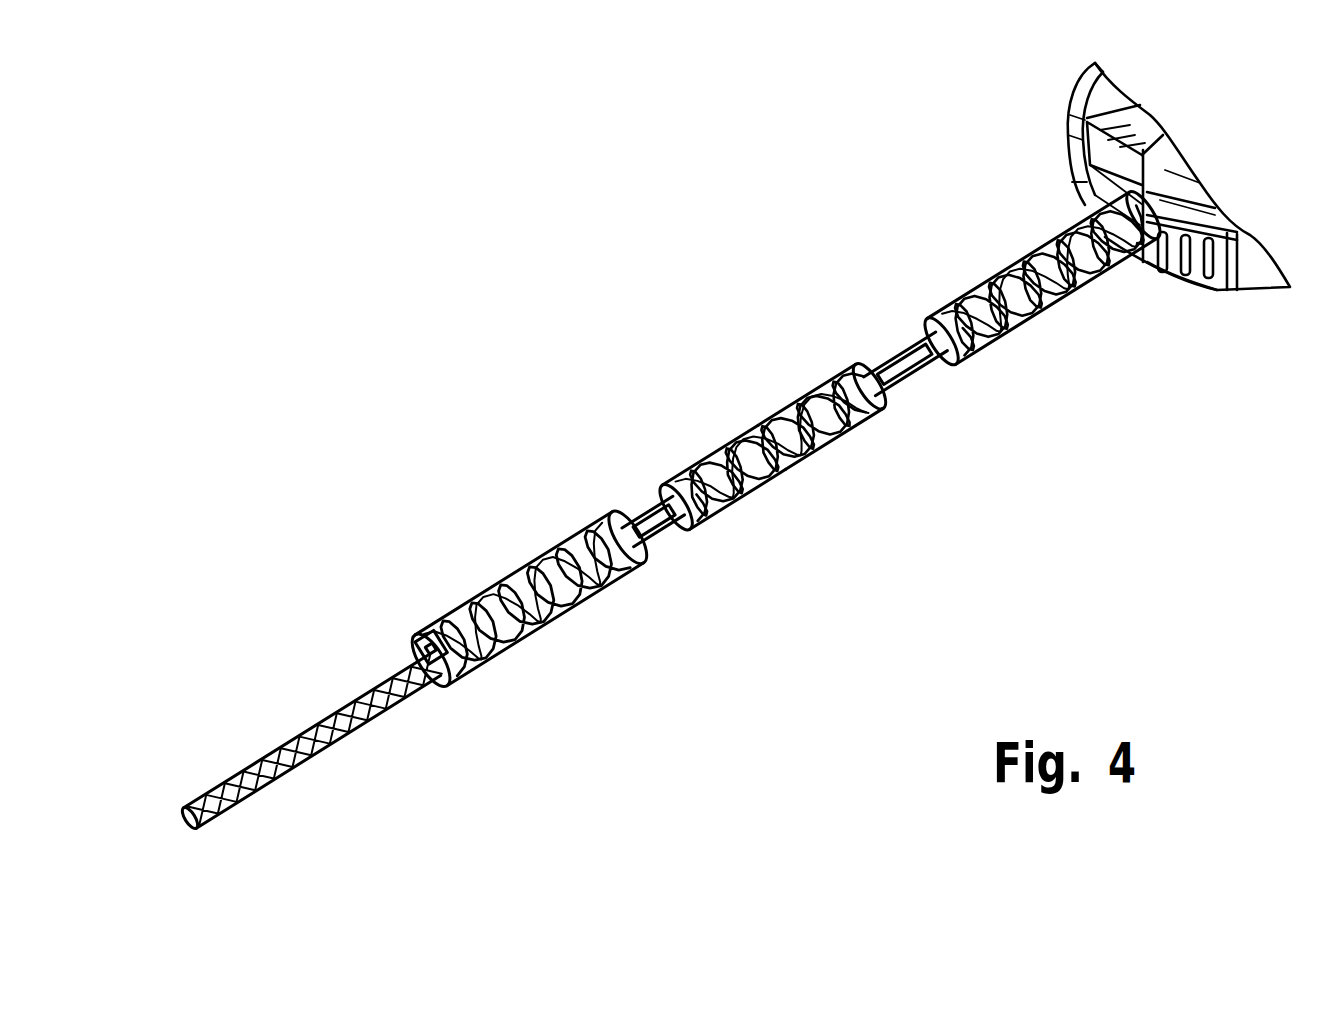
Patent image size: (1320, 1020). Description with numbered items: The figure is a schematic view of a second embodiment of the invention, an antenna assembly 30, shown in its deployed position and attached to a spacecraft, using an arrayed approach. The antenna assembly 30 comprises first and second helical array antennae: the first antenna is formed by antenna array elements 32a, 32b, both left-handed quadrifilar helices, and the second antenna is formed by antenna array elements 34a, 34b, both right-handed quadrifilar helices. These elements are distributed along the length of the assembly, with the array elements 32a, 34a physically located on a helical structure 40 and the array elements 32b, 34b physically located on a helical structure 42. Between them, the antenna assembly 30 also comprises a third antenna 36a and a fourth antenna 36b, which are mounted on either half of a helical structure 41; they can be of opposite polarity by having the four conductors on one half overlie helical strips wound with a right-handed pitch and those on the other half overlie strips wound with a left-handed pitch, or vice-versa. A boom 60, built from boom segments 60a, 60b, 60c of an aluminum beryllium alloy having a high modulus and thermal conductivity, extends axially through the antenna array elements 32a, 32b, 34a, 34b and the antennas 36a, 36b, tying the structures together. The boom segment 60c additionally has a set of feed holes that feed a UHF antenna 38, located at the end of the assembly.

The antenna assembly 30 is at (597, 398).
The antenna array element 32a is at (513, 650).
The antenna array element 32b is at (1015, 330).
The antenna array element 34a is at (610, 587).
The antenna array element 34b is at (1092, 285).
The third antenna 36a is at (733, 513).
The fourth antenna 36b is at (863, 430).
The UHF antenna 38 is at (317, 767).
The helical structure 40 is at (500, 567).
The helical structure 41 is at (778, 405).
The helical structure 42 is at (993, 247).
The boom 60 is at (907, 333).
The boom segment 60a is at (947, 347).
The boom segment 60b is at (678, 530).
The boom segment 60c is at (655, 540).